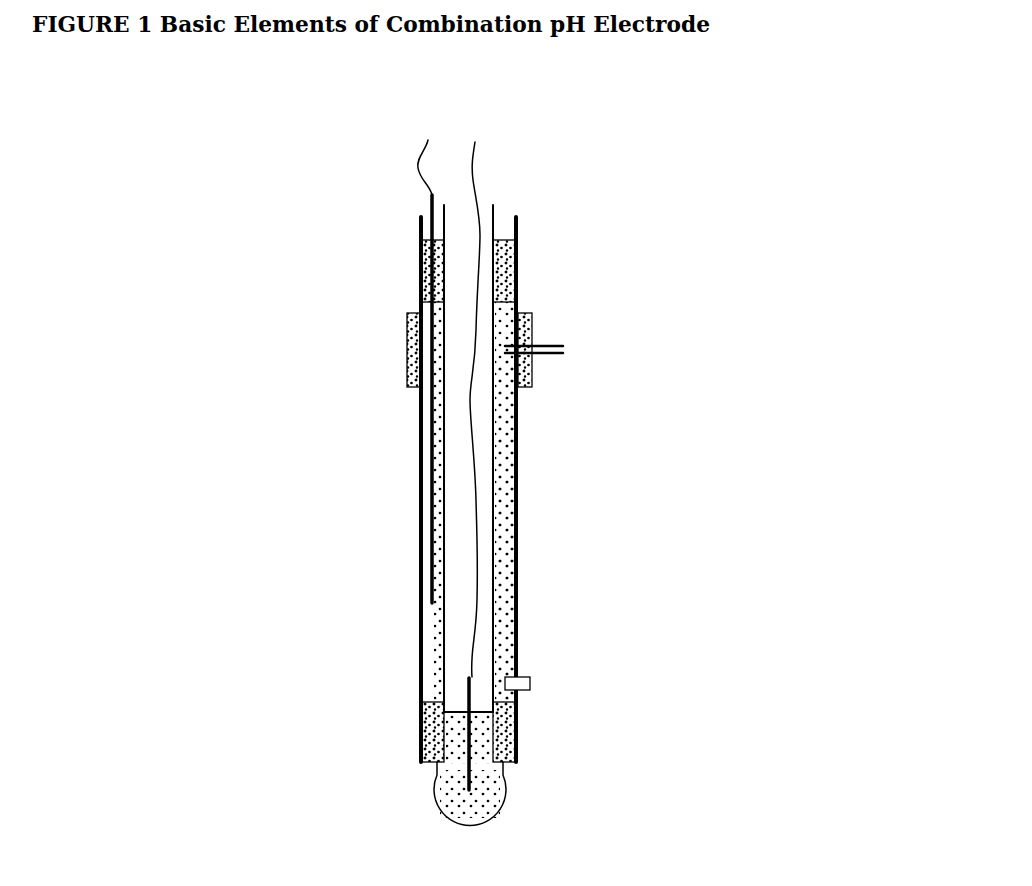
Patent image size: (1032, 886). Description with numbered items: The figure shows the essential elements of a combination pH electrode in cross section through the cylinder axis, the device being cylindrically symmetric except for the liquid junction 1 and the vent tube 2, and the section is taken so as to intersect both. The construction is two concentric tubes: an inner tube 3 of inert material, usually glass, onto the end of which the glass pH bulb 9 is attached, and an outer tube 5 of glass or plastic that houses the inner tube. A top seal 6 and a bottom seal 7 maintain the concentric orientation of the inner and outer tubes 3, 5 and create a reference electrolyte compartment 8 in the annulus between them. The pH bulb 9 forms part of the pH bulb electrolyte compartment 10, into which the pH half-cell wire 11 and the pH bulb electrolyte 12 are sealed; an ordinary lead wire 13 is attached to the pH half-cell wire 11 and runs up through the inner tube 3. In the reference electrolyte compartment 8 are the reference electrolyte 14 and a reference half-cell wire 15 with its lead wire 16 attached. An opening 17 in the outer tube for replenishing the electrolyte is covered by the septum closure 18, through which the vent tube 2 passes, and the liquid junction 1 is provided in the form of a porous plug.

The liquid junction 1 is at (535, 691).
The vent tube 2 is at (570, 366).
The inner tube 3 is at (498, 204).
The outer tube 5 is at (418, 227).
The top seal 6 is at (419, 278).
The bottom seal 7 is at (428, 714).
The reference electrolyte compartment 8 is at (512, 305).
The pH bulb 9 is at (500, 816).
The pH bulb electrolyte compartment 10 is at (456, 728).
The pH half-cell wire 11 is at (466, 792).
The pH bulb electrolyte 12 is at (503, 789).
The lead wire 13 is at (488, 140).
The reference electrolyte 14 is at (590, 607).
The reference half-cell wire 15 is at (430, 581).
The lead wire 16 is at (424, 140).
The opening 17 is at (522, 356).
The septum closure 18 is at (406, 346).